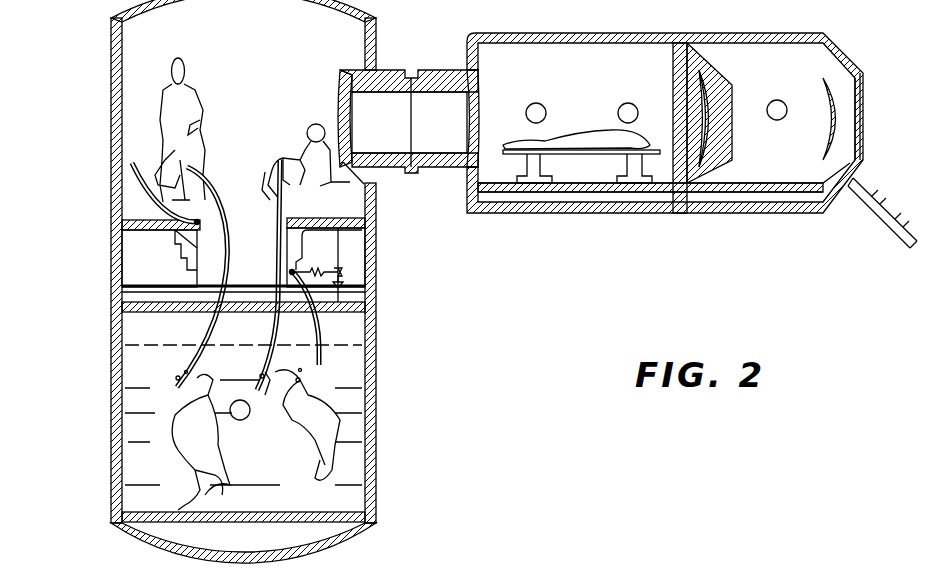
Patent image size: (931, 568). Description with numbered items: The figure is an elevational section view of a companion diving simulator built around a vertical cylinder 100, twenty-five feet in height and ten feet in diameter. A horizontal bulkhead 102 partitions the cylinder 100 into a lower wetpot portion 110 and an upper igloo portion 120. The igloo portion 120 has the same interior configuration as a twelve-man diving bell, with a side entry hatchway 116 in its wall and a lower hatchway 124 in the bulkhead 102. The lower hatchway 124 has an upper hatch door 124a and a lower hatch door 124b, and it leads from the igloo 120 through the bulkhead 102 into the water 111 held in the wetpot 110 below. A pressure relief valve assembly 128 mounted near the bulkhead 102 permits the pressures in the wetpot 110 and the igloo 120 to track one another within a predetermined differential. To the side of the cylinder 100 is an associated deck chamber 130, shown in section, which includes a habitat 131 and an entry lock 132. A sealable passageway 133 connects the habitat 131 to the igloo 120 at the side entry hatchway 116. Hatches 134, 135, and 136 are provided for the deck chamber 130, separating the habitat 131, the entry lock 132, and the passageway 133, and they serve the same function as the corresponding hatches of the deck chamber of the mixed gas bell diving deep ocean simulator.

The vertical cylinder 100 is at (422, 334).
The horizontal bulkhead 102 is at (364, 233).
The lower wetpot portion 110 is at (137, 328).
The water 111 is at (133, 453).
The side entry hatchway 116 is at (343, 108).
The upper igloo portion 120 is at (137, 143).
The lower hatchway 124 is at (230, 247).
The upper hatch door 124a is at (140, 188).
The lower hatch door 124b is at (350, 335).
The pressure relief valve assembly 128 is at (340, 250).
The deck chamber 130 is at (655, 242).
The habitat 131 is at (568, 172).
The entry lock 132 is at (760, 170).
The sealable passageway 133 is at (440, 105).
The hatch 134 is at (732, 98).
The hatch 135 is at (833, 108).
The hatch 136 is at (473, 110).